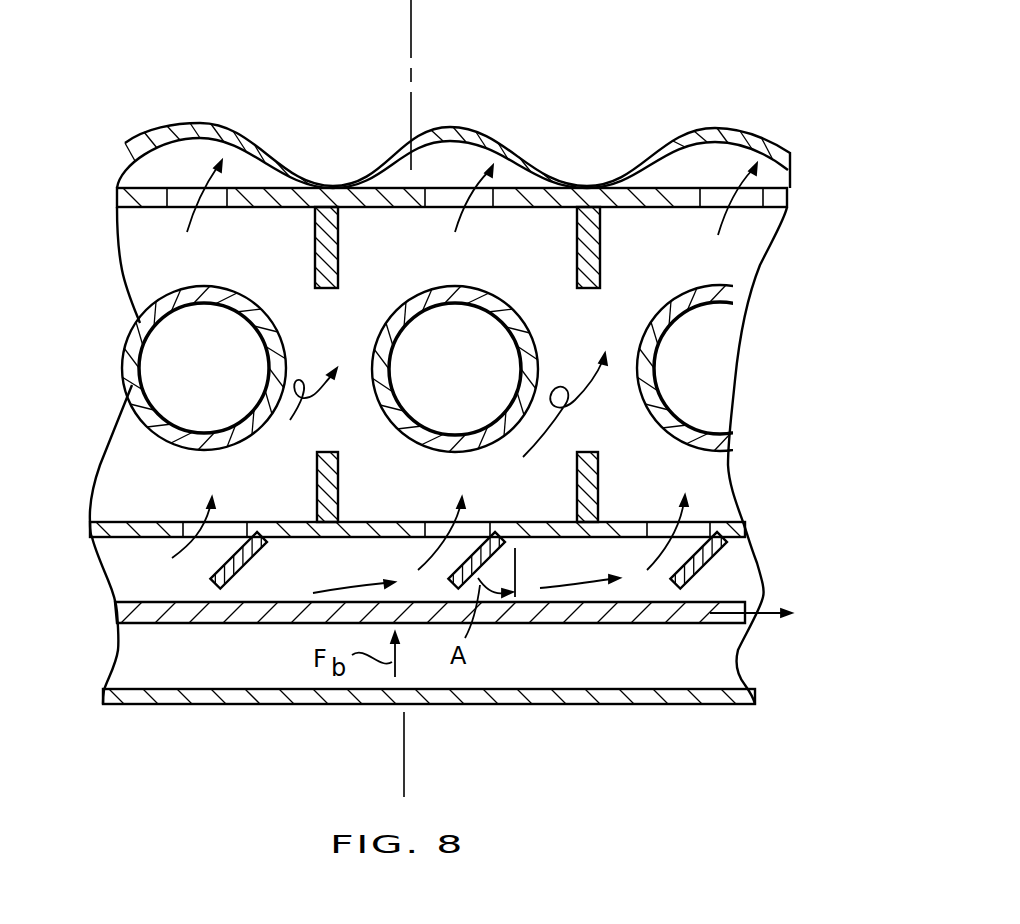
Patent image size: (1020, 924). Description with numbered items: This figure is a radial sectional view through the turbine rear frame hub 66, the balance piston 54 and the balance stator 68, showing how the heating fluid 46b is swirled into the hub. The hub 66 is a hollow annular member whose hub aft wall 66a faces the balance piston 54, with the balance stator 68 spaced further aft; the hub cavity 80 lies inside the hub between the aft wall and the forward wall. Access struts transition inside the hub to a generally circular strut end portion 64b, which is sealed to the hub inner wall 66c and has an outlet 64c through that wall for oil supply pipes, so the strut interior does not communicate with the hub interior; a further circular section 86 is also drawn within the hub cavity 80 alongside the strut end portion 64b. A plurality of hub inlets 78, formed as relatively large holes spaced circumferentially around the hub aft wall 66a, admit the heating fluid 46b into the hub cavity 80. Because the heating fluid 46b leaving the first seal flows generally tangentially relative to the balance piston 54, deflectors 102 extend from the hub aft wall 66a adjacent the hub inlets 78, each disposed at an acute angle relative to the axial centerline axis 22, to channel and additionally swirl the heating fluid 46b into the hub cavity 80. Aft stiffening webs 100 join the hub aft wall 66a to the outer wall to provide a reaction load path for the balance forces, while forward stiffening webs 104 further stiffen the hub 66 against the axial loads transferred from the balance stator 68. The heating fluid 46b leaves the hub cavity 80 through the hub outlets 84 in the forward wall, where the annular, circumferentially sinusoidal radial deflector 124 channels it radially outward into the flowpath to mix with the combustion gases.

The axial centerline axis 22 is at (412, 100).
The radial deflector 124 is at (580, 186).
The hub 66 is at (798, 199).
The hub aft wall 66a is at (127, 522).
The hub inner wall 66c is at (737, 250).
The strut end portion 64b is at (168, 300).
The outlet 64c is at (157, 375).
The tube 86 is at (494, 301).
The hub outlets 84 is at (212, 200).
The forward stiffening webs 104 is at (338, 260).
The aft stiffening webs 100 is at (338, 470).
The deflectors 102 is at (238, 568).
The hub inlets 78 is at (227, 522).
The hub cavity 80 is at (347, 340).
The heating fluid 46b is at (590, 385).
The balance piston 54 is at (605, 628).
The balance stator 68 is at (567, 708).